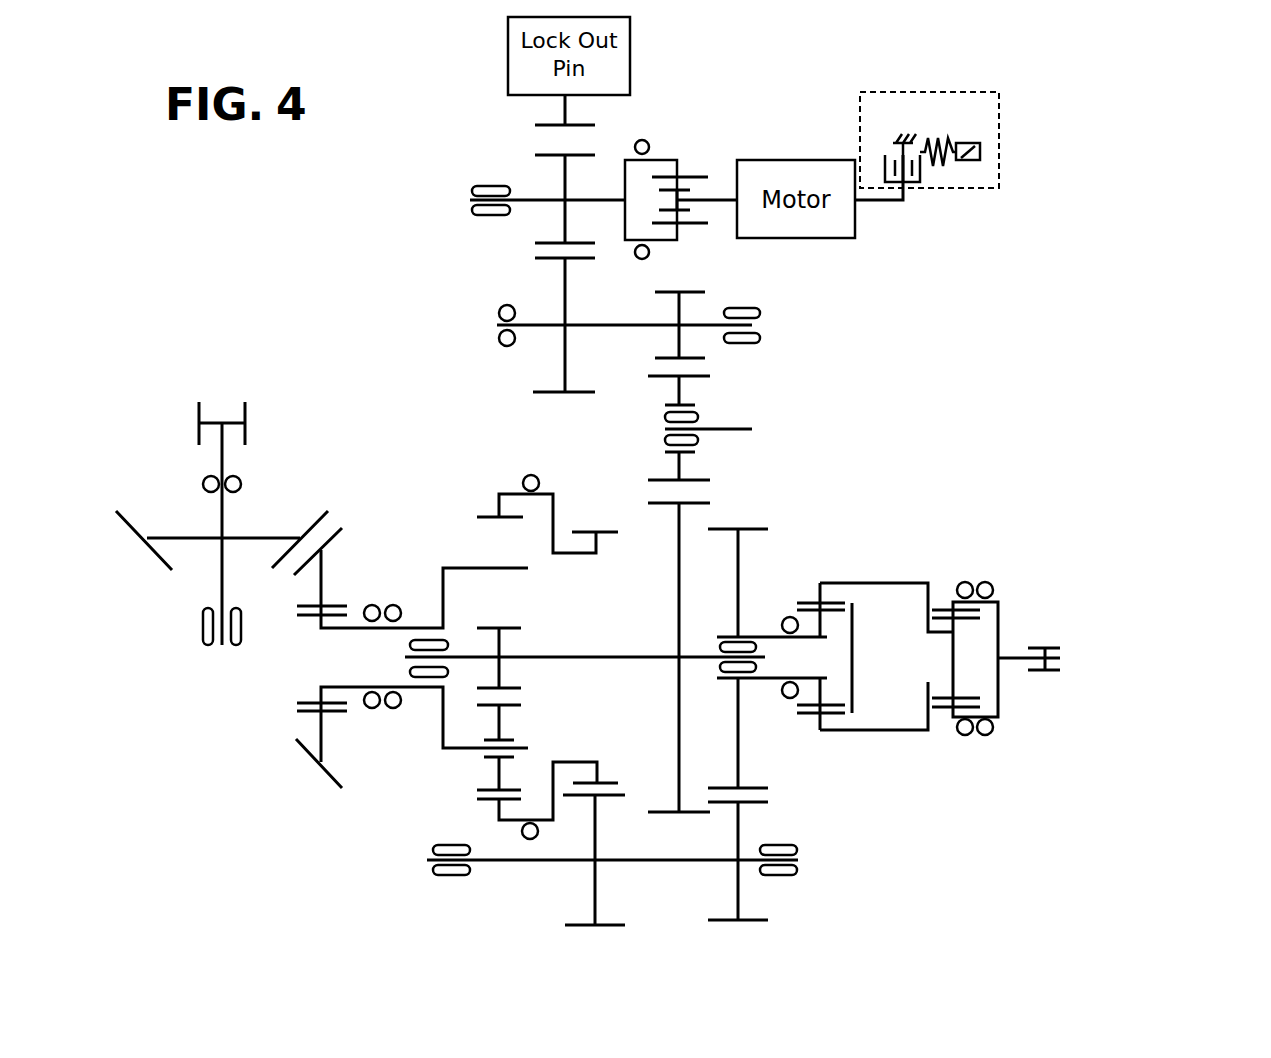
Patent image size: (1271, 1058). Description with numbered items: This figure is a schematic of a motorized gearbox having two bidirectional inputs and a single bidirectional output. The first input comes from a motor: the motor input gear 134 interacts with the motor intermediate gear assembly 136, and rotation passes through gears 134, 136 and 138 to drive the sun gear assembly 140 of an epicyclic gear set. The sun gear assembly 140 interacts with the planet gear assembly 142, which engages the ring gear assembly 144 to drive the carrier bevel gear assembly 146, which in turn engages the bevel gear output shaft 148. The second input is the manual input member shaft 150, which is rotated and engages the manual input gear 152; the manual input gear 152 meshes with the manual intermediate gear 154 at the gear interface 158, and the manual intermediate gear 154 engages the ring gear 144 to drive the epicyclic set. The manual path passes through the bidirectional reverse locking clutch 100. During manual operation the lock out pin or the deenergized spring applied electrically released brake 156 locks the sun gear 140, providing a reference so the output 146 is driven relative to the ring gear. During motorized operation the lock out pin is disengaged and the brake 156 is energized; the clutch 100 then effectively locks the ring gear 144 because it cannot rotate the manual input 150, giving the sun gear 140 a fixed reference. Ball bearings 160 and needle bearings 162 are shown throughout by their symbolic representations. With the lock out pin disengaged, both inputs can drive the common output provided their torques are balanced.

The bidirectional reverse locking clutch 100 is at (908, 668).
The motor input gear 134 is at (541, 198).
The motor intermediate gear assembly 136 is at (647, 322).
The gear 138 is at (730, 429).
The sun gear assembly 140 is at (603, 650).
The planet gear assembly 142 is at (500, 725).
The ring gear assembly 144 is at (488, 505).
The carrier bevel gear assembly 146 is at (392, 595).
The bevel gear output shaft 148 is at (311, 490).
The manual input member shaft 150 is at (1053, 633).
The manual input gear 152 is at (786, 608).
The manual intermediate gear 154 is at (566, 870).
The spring applied electrically released brake 156 is at (950, 92).
The gear interface 158 is at (760, 793).
The ball bearings 160 is at (497, 314).
The needle bearings 162 is at (752, 304).